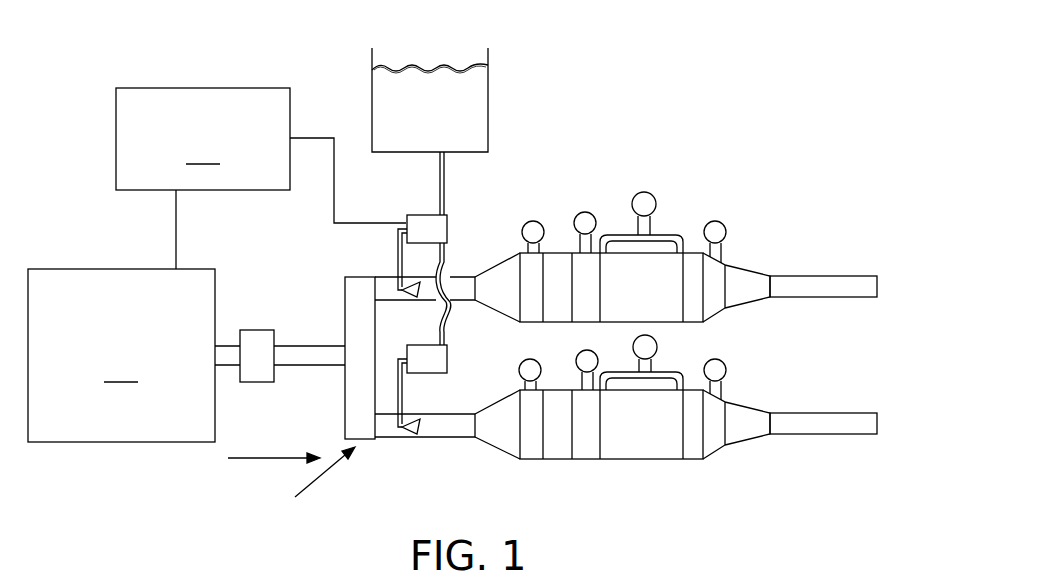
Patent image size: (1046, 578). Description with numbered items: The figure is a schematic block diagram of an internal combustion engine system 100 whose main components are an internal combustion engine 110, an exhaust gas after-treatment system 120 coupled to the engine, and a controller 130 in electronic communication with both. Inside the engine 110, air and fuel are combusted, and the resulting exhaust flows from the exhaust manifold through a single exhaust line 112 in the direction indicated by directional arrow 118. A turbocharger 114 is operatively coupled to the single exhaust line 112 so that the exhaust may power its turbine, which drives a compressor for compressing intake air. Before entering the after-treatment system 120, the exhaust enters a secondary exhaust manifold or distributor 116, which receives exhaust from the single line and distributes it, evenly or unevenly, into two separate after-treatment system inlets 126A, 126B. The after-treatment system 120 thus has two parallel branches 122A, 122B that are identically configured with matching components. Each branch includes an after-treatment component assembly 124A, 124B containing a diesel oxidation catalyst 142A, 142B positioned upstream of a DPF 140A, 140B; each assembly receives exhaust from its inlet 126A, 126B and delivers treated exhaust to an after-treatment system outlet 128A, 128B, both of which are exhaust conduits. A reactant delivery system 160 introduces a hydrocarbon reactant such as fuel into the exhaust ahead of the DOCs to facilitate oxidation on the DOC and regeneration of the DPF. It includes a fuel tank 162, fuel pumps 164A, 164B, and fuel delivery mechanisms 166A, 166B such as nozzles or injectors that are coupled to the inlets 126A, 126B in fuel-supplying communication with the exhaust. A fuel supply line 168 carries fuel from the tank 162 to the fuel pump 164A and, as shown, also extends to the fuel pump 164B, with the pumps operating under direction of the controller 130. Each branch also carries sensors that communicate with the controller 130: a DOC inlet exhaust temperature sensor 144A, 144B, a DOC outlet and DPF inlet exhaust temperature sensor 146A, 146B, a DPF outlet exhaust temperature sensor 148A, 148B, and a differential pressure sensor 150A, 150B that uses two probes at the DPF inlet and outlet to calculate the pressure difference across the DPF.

The internal combustion engine system 100 is at (684, 80).
The internal combustion engine 110 is at (121, 355).
The single exhaust line 112 is at (316, 346).
The turbocharger 114 is at (258, 383).
The secondary exhaust manifold 116 is at (345, 390).
The directional arrow 118 is at (268, 458).
The exhaust gas after-treatment system 120 is at (308, 485).
The first after-treatment branch 122A is at (634, 242).
The second after-treatment branch 122B is at (640, 428).
The after-treatment component assembly 124A is at (731, 318).
The after-treatment component assembly 124B is at (733, 453).
The after-treatment system inlet 126A is at (457, 302).
The after-treatment system inlet 126B is at (462, 439).
The exhaust after-treatment system outlet 128A is at (823, 288).
The exhaust after-treatment system outlet 128B is at (830, 425).
The controller 130 is at (261, 178).
The DPF 140A is at (690, 326).
The DPF 140B is at (645, 461).
The diesel oxidation catalyst 142A is at (566, 322).
The diesel oxidation catalyst 142B is at (556, 461).
The DOC inlet exhaust temperature sensor 144A is at (522, 229).
The DOC inlet exhaust temperature sensor 144B is at (518, 376).
The DOC outlet and DPF inlet exhaust temperature sensor 146A is at (586, 212).
The DOC outlet and DPF inlet exhaust temperature sensor 146B is at (580, 364).
The DPF outlet exhaust temperature sensor 148A is at (726, 228).
The DPF outlet exhaust temperature sensor 148B is at (724, 372).
The differential pressure sensor 150A is at (647, 192).
The differential pressure sensor 150B is at (637, 343).
The reactant delivery system 160 is at (508, 66).
The fuel tank 162 is at (488, 117).
The fuel pump 164A is at (404, 226).
The fuel pump 164B is at (435, 374).
The fuel delivery mechanism 166A is at (412, 293).
The fuel delivery mechanism 166B is at (410, 430).
The fuel supply line 168 is at (446, 165).